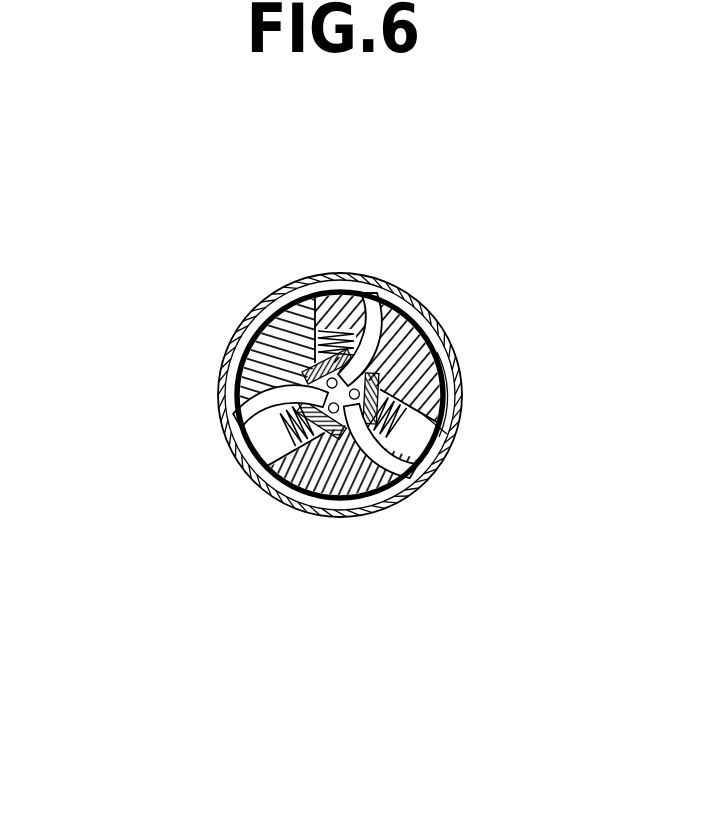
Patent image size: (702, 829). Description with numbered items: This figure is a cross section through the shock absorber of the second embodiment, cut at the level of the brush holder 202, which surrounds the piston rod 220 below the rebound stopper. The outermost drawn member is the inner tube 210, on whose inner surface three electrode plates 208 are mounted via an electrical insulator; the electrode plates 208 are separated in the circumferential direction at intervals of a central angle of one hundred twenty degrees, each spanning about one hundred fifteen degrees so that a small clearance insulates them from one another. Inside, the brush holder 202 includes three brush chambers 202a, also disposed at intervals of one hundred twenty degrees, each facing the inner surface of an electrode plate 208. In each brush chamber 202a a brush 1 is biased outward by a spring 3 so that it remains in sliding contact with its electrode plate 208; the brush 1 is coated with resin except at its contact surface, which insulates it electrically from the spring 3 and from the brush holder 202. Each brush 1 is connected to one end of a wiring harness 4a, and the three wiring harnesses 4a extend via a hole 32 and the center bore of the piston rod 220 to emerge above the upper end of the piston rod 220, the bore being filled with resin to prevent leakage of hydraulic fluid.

The brush 1 is at (346, 330).
The spring 3 is at (245, 305).
The wiring harness 4a is at (220, 375).
The hole 32 is at (380, 498).
The brush holder 202 is at (337, 492).
The brush chamber 202a is at (447, 432).
The electrode plate 208 is at (378, 290).
The inner tube 210 is at (282, 298).
The piston rod 220 is at (450, 366).